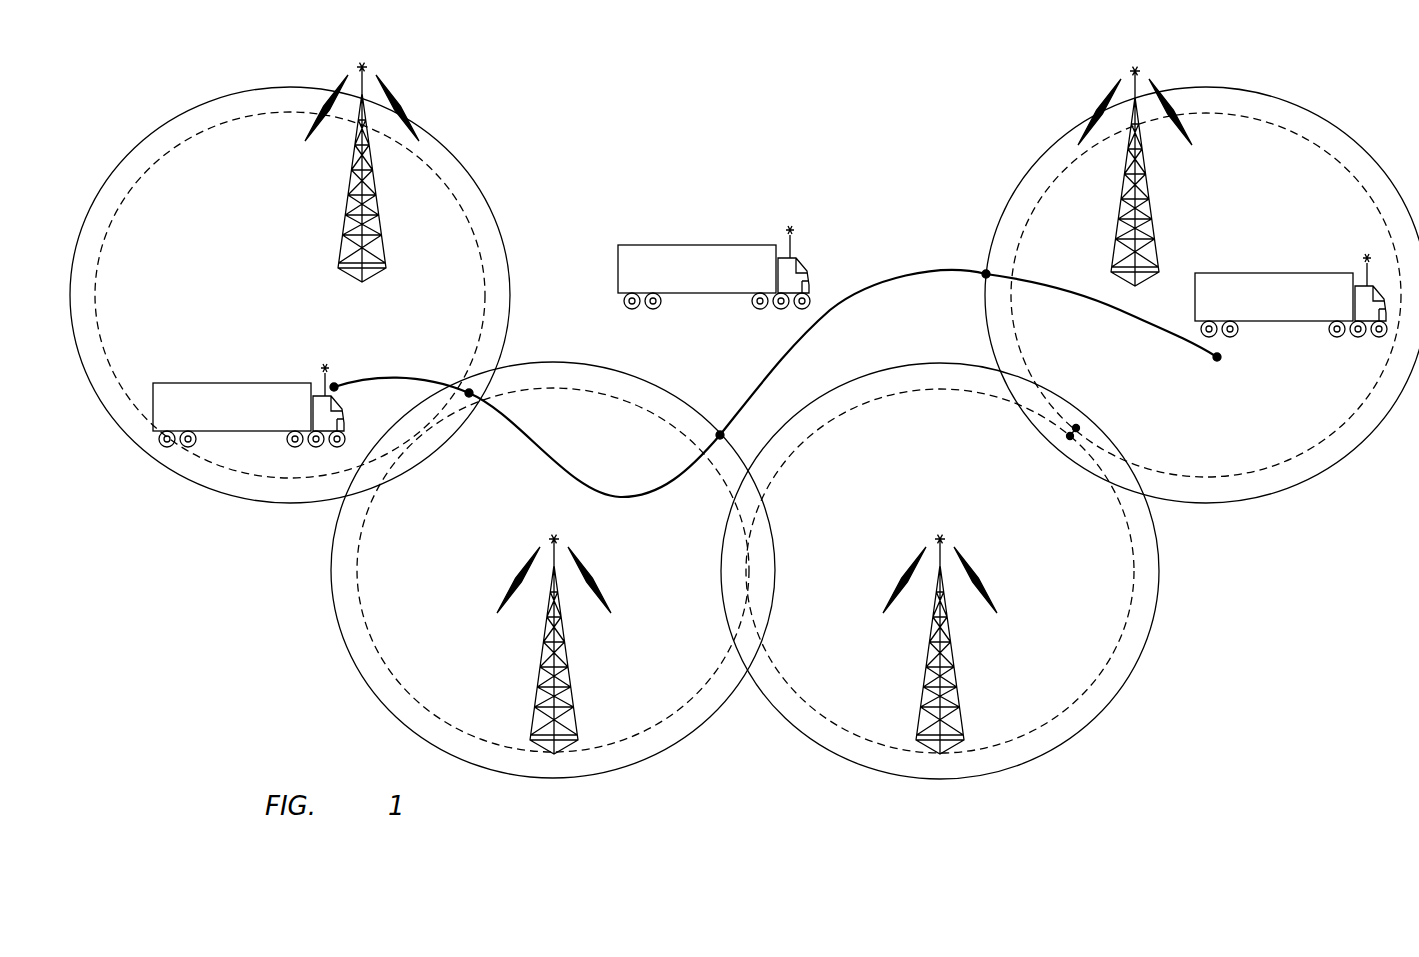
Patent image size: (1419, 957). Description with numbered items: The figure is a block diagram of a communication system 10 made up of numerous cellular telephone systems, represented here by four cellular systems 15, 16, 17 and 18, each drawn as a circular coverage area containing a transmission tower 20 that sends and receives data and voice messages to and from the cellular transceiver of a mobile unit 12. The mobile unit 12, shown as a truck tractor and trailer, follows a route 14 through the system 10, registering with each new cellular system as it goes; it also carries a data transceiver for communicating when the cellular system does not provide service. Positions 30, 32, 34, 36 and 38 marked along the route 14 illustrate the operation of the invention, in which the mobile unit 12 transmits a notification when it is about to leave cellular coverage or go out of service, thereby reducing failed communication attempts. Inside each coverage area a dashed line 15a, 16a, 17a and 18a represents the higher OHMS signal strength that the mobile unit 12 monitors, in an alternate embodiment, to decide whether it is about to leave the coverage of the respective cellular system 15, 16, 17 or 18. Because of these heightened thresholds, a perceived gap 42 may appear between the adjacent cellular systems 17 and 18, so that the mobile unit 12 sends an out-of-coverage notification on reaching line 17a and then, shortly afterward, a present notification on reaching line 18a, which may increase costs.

The communication system 10 is at (568, 178).
The mobile unit 12 is at (320, 366).
The route 14 is at (550, 462).
The cellular system 15 is at (248, 503).
The dashed line 15a is at (222, 124).
The cellular system 16 is at (512, 779).
The dashed line 16a is at (603, 748).
The cellular system 17 is at (987, 778).
The dashed line 17a is at (893, 746).
The cellular system 18 is at (1250, 502).
The dashed line 18a is at (1271, 125).
The transmission tower 20 is at (345, 208).
The position 30 is at (338, 385).
The position 32 is at (469, 395).
The position 34 is at (720, 433).
The position 36 is at (984, 272).
The position 38 is at (1218, 359).
The perceived gap 42 is at (1077, 427).